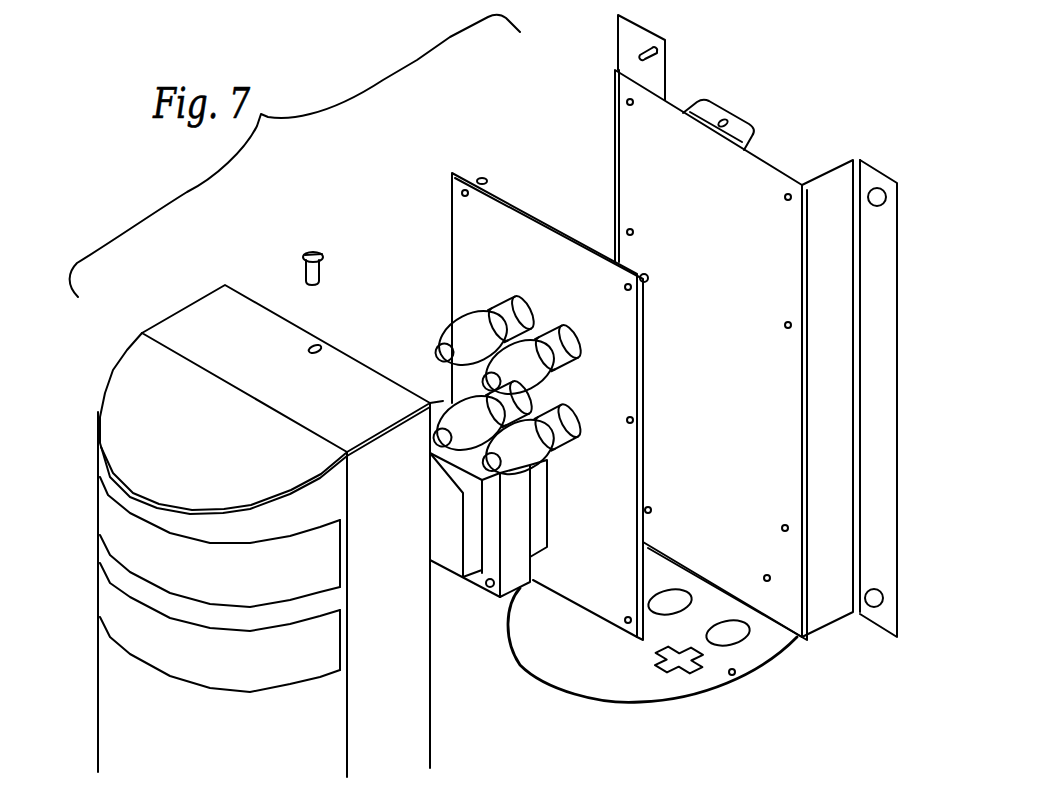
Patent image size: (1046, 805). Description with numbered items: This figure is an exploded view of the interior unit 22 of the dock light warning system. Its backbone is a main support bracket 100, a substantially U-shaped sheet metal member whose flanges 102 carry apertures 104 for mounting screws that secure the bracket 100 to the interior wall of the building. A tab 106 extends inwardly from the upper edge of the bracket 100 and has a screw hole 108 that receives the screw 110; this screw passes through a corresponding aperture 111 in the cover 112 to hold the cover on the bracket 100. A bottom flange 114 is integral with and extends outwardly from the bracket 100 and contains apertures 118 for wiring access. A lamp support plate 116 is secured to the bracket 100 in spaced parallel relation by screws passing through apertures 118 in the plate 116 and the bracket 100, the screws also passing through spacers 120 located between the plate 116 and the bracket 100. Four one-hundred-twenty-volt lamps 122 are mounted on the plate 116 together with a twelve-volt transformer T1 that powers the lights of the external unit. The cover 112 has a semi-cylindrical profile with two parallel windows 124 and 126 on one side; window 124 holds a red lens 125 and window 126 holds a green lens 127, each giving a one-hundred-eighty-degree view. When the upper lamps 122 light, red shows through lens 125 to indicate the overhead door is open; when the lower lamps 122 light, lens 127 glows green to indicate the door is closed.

The interior unit 22 is at (449, 137).
The main support bracket 100 is at (762, 167).
The flanges 102 is at (617, 41).
The apertures 104 is at (665, 41).
The tab 106 is at (738, 128).
The screw hole 108 is at (723, 120).
The screw 110 is at (312, 250).
The aperture 111 is at (321, 346).
The cover 112 is at (200, 312).
The bottom flange 114 is at (734, 675).
The lamp support plate 116 is at (462, 217).
The apertures 118 is at (631, 106).
The spacers 120 is at (484, 178).
The lamps 122 is at (457, 396).
The window 124 is at (238, 540).
The red lens 125 is at (115, 517).
The window 126 is at (263, 693).
The green lens 127 is at (113, 603).
The transformer T1 is at (508, 600).